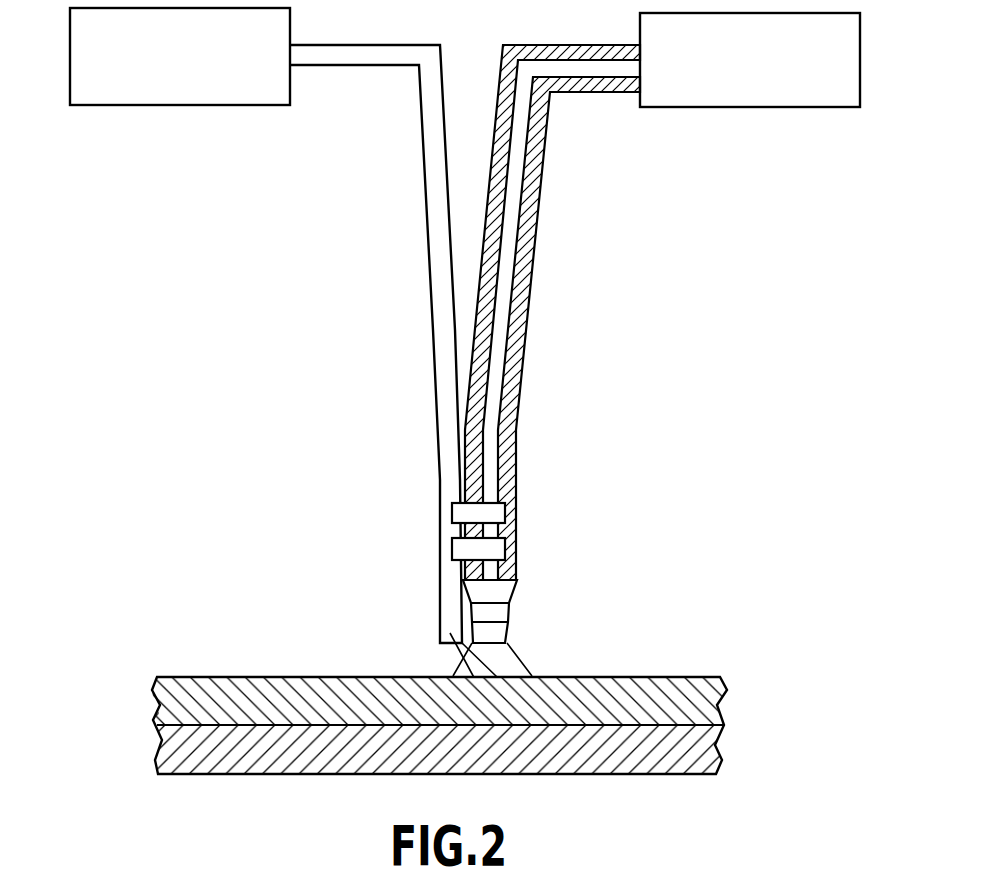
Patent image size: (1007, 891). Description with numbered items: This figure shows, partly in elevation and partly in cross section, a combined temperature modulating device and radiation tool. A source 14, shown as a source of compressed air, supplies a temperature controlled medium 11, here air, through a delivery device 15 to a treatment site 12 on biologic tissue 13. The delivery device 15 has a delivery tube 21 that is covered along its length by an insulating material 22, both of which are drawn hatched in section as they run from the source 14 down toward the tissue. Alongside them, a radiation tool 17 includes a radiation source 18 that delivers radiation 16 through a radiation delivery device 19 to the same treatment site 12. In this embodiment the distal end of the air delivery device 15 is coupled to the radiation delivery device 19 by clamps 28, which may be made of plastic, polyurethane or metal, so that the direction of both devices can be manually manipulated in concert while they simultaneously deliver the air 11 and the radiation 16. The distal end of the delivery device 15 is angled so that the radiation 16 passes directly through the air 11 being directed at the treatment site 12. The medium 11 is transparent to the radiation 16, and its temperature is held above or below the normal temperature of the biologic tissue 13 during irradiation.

The temperature controlled medium 11 is at (510, 667).
The treatment site 12 is at (445, 672).
The biologic tissue 13 is at (620, 690).
The source 14 is at (848, 107).
The delivery device 15 is at (552, 312).
The radiation 16 is at (456, 661).
The radiation tool 17 is at (500, 612).
The radiation source 18 is at (93, 105).
The radiation delivery device 19 is at (442, 440).
The delivery tube 21 is at (505, 280).
The insulating material 22 is at (518, 232).
The clamps 28 is at (498, 513).